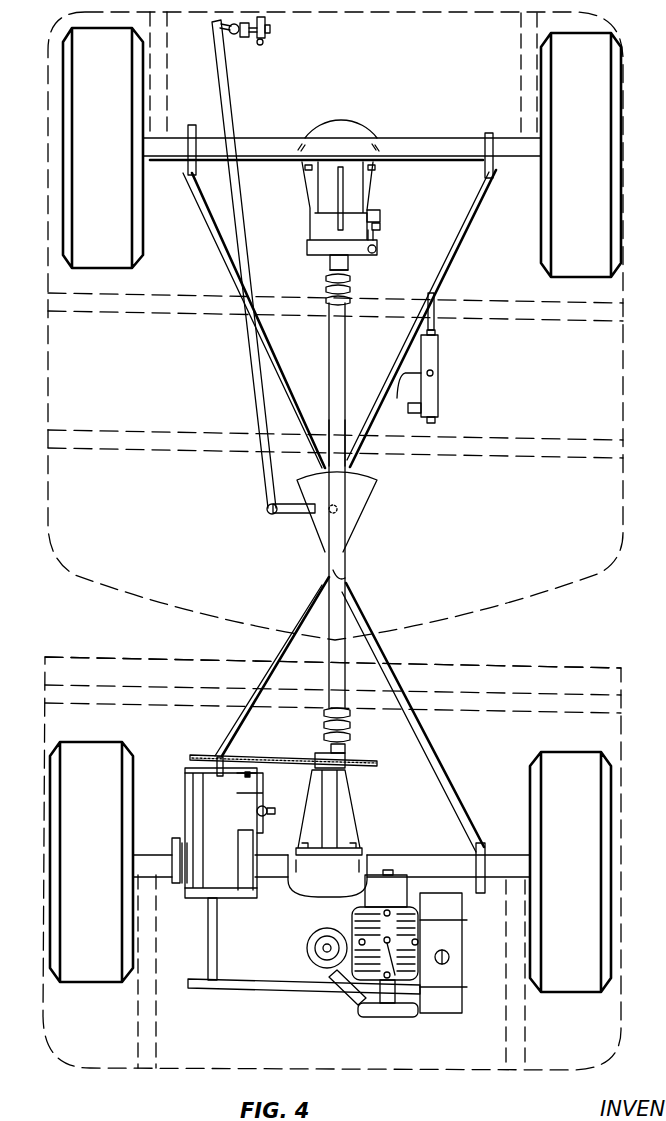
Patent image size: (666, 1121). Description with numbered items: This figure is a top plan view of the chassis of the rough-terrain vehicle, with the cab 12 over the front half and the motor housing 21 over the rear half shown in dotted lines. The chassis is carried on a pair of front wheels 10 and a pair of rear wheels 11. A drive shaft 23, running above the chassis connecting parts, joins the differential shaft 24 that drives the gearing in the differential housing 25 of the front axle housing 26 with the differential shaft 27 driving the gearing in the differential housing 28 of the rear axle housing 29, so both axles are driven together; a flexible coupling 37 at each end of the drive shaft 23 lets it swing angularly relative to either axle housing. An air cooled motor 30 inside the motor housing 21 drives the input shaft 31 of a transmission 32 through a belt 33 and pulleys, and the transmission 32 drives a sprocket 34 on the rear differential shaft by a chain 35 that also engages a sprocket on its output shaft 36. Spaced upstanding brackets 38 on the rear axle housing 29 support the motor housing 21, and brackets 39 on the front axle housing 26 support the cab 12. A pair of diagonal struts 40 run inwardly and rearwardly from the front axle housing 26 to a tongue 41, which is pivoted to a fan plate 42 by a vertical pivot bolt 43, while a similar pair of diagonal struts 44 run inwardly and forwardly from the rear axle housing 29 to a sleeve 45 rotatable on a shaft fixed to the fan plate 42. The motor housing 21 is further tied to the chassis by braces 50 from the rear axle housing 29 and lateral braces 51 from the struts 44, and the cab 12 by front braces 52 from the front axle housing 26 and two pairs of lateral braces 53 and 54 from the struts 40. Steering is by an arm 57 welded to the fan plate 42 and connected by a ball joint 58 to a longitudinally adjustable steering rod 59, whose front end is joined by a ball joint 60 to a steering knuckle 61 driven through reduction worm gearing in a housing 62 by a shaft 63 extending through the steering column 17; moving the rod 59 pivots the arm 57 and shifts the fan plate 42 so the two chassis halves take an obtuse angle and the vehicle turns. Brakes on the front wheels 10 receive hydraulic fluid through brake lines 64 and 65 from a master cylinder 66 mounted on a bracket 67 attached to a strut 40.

The front wheels 10 is at (78, 104).
The rear wheels 11 is at (63, 890).
The cab 12 is at (622, 417).
The steering column 17 is at (253, 44).
The motor housing 21 is at (621, 740).
The drive shaft 23 is at (332, 368).
The differential shaft 24 is at (327, 270).
The differential housing 25 is at (340, 123).
The front axle housing 26 is at (398, 148).
The differential shaft 27 is at (341, 744).
The differential housing 28 is at (354, 838).
The rear axle housing 29 is at (405, 858).
The air cooled motor 30 is at (352, 914).
The input shaft 31 is at (208, 950).
The transmission 32 is at (248, 884).
The belt 33 is at (264, 986).
The sprocket 34 is at (345, 770).
The chain 35 is at (247, 753).
The output shaft 36 is at (188, 762).
The flexible coupling 37 is at (328, 296).
The brackets 38 is at (488, 848).
The brackets 39 is at (193, 163).
The diagonal struts 40 is at (227, 257).
The tongue 41 is at (350, 433).
The fan plate 42 is at (362, 483).
The pivot bolt 43 is at (337, 512).
The diagonal struts 44 is at (365, 613).
The sleeve 45 is at (347, 573).
The braces 50 is at (152, 1025).
The lateral braces 51 is at (128, 712).
The front braces 52 is at (160, 115).
The lateral braces 53 is at (163, 297).
The lateral braces 54 is at (221, 450).
The arm 57 is at (293, 503).
The ball joint 58 is at (273, 514).
The steering rod 59 is at (232, 125).
The ball joint 60 is at (222, 30).
The steering knuckle 61 is at (242, 34).
The housing 62 is at (270, 30).
The shaft 63 is at (263, 44).
The brake line 64 is at (421, 168).
The brake line 65 is at (481, 212).
The master cylinder 66 is at (438, 410).
The bracket 67 is at (401, 401).